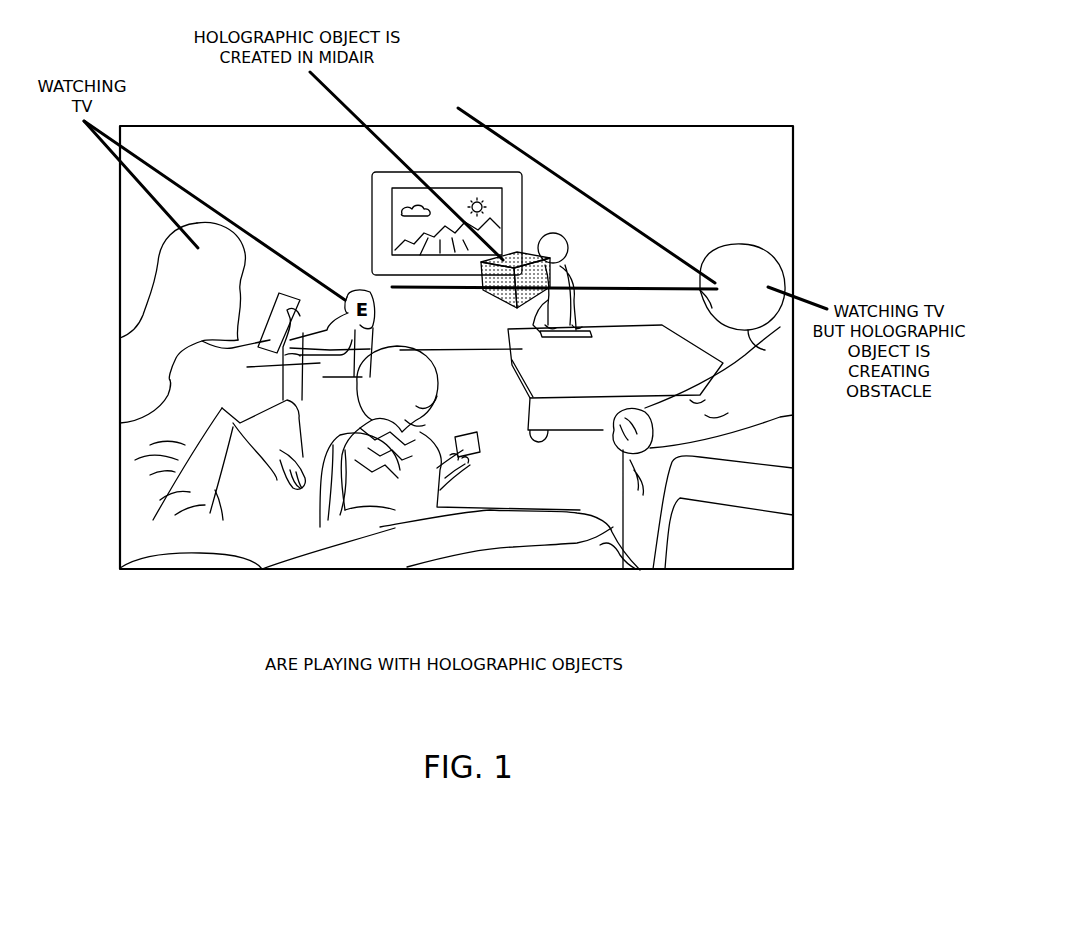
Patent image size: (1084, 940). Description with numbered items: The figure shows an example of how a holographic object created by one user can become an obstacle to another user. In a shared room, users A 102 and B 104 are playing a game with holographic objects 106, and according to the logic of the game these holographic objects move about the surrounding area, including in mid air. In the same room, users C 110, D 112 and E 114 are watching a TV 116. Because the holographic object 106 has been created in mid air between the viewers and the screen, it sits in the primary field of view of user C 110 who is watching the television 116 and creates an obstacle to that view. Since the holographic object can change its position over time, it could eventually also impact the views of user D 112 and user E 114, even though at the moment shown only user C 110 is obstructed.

The user A 102 is at (408, 455).
The user B 104 is at (550, 303).
The holographic objects 106 is at (358, 108).
The user C 110 is at (808, 297).
The user D 112 is at (142, 183).
The user E 114 is at (180, 183).
The TV 116 is at (372, 203).